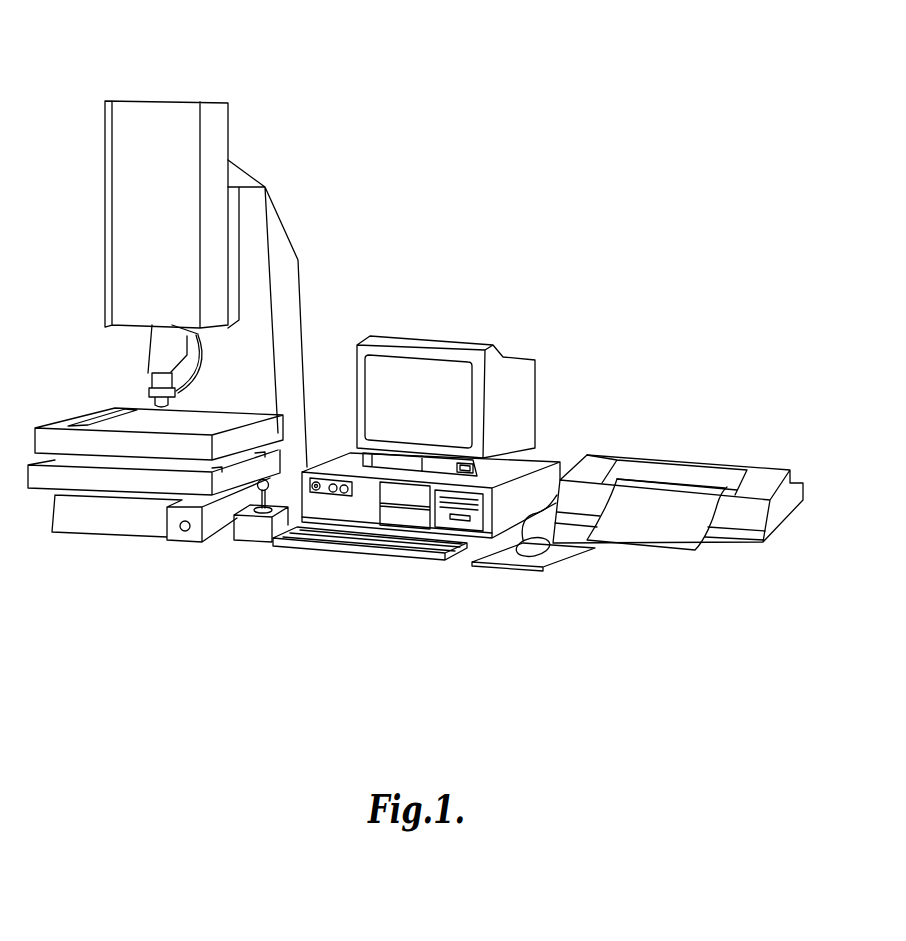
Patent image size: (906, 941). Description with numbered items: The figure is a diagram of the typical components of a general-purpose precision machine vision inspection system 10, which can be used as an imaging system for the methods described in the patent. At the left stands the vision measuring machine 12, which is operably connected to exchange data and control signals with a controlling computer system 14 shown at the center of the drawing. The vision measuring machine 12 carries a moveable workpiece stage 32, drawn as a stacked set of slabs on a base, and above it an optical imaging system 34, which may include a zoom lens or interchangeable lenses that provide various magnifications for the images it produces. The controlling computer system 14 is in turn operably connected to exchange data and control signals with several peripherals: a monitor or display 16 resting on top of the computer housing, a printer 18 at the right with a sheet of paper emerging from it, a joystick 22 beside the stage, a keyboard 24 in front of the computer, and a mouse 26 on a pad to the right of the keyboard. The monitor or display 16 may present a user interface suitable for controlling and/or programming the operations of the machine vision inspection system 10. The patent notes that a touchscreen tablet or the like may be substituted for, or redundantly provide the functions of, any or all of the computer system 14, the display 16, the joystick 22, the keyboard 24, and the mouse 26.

The machine vision inspection system 10 is at (546, 153).
The vision measuring machine 12 is at (155, 101).
The controlling computer system 14 is at (538, 462).
The monitor or display 16 is at (430, 337).
The printer 18 is at (691, 459).
The joystick 22 is at (253, 542).
The keyboard 24 is at (352, 555).
The mouse 26 is at (545, 547).
The moveable workpiece stage 32 is at (78, 415).
The optical imaging system 34 is at (150, 327).